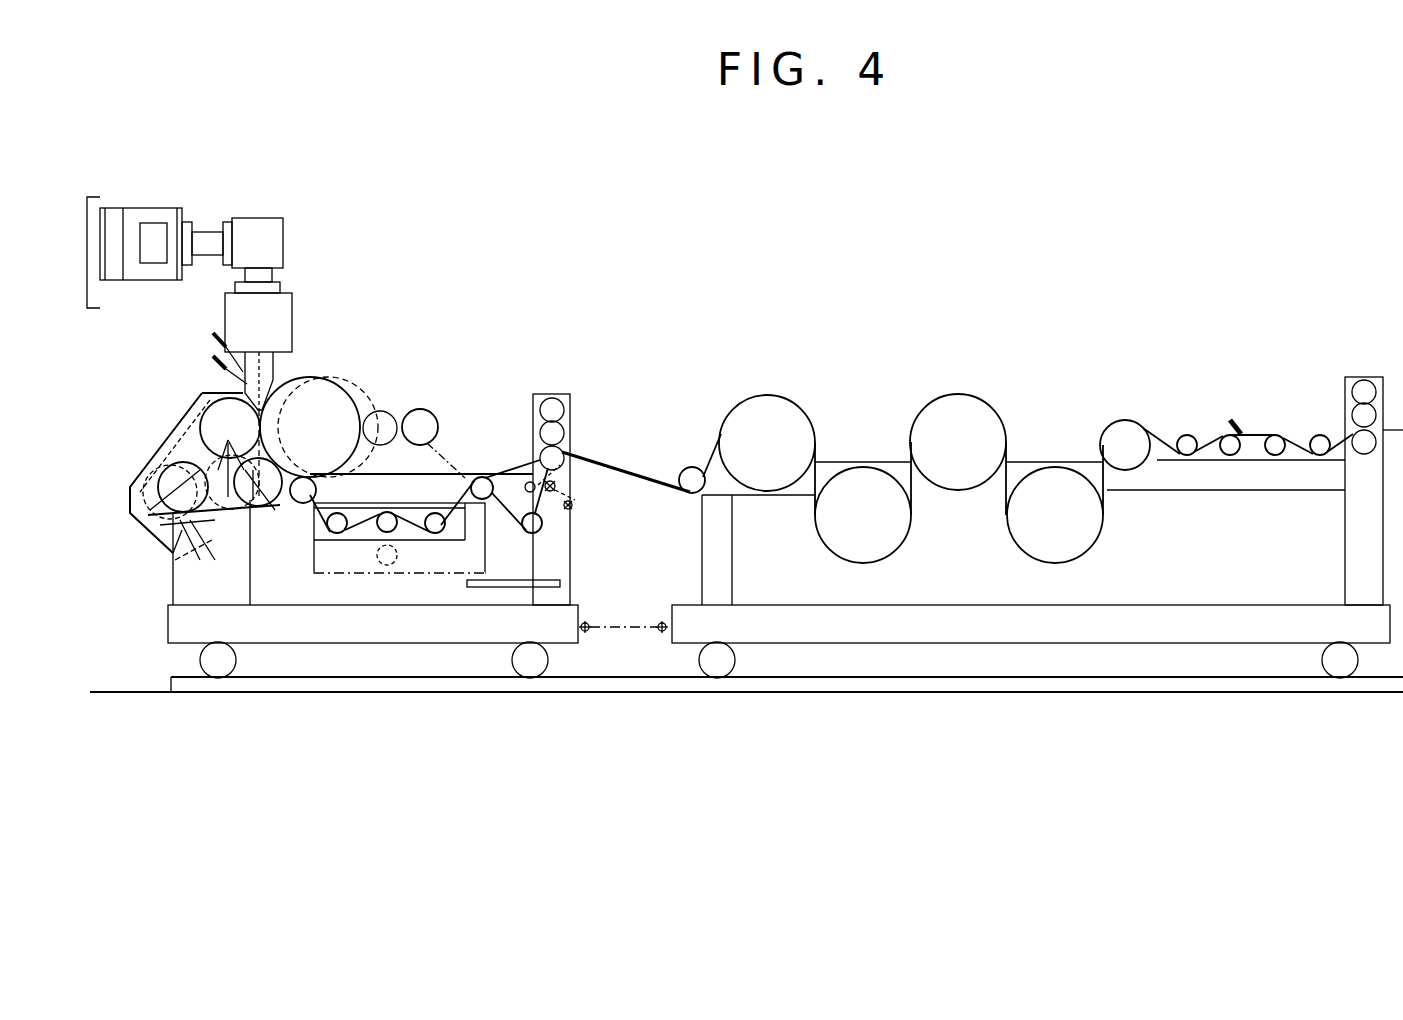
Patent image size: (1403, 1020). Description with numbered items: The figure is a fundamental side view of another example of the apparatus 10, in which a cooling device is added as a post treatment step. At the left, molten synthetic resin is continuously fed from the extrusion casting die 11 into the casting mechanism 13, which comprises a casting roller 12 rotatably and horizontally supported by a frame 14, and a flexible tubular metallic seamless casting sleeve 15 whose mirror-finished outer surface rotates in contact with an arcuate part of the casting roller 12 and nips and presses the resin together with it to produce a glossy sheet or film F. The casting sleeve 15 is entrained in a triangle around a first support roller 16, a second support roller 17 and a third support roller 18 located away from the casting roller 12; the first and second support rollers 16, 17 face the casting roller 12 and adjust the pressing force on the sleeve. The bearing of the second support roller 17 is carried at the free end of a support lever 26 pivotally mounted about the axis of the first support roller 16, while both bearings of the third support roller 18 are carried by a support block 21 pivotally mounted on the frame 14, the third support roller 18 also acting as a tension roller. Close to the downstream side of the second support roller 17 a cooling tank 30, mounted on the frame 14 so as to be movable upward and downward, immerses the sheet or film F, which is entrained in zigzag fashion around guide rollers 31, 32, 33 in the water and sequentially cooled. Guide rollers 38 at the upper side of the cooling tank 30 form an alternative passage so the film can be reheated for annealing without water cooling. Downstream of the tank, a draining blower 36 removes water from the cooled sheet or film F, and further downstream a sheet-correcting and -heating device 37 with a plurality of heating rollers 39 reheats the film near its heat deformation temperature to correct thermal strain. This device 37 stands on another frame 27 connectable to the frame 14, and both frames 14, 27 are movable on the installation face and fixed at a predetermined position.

The apparatus 10 is at (490, 317).
The extrusion casting die 11 is at (280, 367).
The casting roller 12 is at (313, 380).
The casting mechanism 13 is at (253, 348).
The frame 14 is at (277, 633).
The casting sleeve 15 is at (188, 440).
The first support roller 16 is at (190, 410).
The second support roller 17 is at (253, 533).
The third support roller 18 is at (175, 512).
The support block 21 is at (190, 550).
The support lever 26 is at (192, 380).
The another frame 27 is at (762, 633).
The cooling tank 30 is at (485, 542).
The guide roller 31 is at (333, 535).
The guide roller 32 is at (388, 533).
The guide roller 33 is at (433, 534).
The draining blower 36 is at (528, 487).
The sheet-correcting and -heating device 37 is at (1036, 398).
The guide rollers 38 is at (422, 430).
The heating rollers 39 is at (911, 447).
The sheet or film F is at (620, 465).